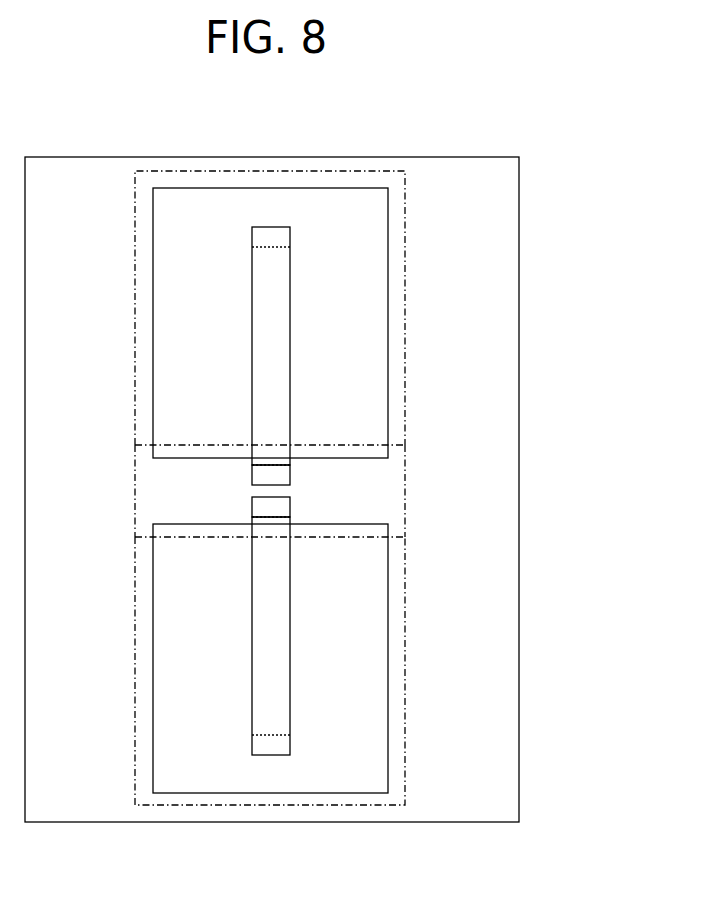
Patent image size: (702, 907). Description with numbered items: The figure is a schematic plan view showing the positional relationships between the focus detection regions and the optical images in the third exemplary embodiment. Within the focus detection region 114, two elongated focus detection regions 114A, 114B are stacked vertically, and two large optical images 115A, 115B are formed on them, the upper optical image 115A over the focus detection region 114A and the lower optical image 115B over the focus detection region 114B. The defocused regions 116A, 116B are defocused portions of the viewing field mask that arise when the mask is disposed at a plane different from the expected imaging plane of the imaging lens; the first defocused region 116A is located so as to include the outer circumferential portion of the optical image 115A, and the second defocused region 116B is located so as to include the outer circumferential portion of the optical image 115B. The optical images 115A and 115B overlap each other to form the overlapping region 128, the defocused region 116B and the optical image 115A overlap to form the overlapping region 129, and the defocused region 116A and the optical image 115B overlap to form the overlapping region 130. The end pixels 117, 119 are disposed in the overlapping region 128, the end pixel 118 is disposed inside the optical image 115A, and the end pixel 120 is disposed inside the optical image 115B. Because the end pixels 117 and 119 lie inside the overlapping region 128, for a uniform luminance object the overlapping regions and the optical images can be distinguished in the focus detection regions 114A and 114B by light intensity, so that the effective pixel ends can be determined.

The focus detection region 114 is at (519, 718).
The focus detection region 114A is at (250, 360).
The focus detection region 114B is at (250, 604).
The optical image 115A is at (363, 258).
The optical image 115B is at (360, 592).
The defocused region 116A is at (400, 358).
The defocused region 116B is at (396, 705).
The end pixel 117 is at (250, 478).
The end pixel 118 is at (250, 237).
The end pixel 119 is at (250, 506).
The end pixel 120 is at (250, 745).
The overlapping region 128 is at (388, 490).
The overlapping region 129 is at (388, 447).
The overlapping region 130 is at (388, 532).